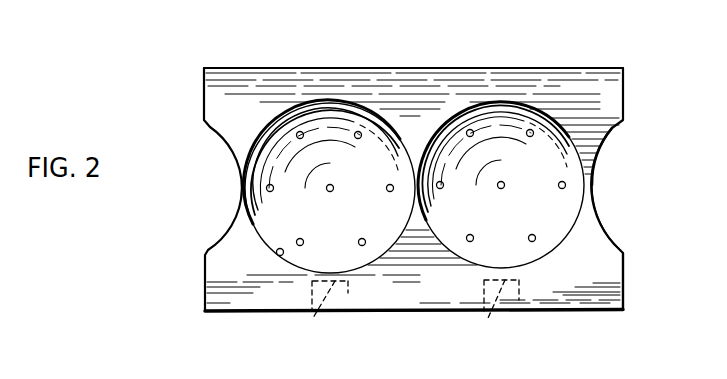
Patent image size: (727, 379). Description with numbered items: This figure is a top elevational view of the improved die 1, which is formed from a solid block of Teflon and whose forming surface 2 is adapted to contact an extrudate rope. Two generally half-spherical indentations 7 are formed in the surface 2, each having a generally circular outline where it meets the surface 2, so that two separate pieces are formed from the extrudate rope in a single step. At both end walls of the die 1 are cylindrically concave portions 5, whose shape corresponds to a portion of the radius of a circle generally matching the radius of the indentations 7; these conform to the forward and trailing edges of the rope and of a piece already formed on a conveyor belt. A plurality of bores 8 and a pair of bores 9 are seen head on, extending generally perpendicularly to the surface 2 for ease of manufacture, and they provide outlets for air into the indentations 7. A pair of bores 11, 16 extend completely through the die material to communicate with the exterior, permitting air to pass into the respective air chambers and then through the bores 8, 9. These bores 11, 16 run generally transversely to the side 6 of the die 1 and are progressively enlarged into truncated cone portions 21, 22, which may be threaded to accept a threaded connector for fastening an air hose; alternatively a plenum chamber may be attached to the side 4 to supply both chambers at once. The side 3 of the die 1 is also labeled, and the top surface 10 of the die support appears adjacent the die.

The die 1 is at (633, 42).
The forming surface 2 is at (216, 106).
The side face 3 is at (627, 275).
The side 4 is at (427, 67).
The cylindrically concave portion 5 is at (602, 222).
The side 6 is at (414, 311).
The half-spherical indentation 7 is at (282, 205).
The bore 8 is at (388, 190).
The bore 9 is at (333, 186).
The top surface 10 is at (276, 253).
The bore 11 is at (312, 311).
The truncated cone portion 21 is at (348, 293).
The bore 16 is at (484, 311).
The truncated cone portion 22 is at (519, 300).